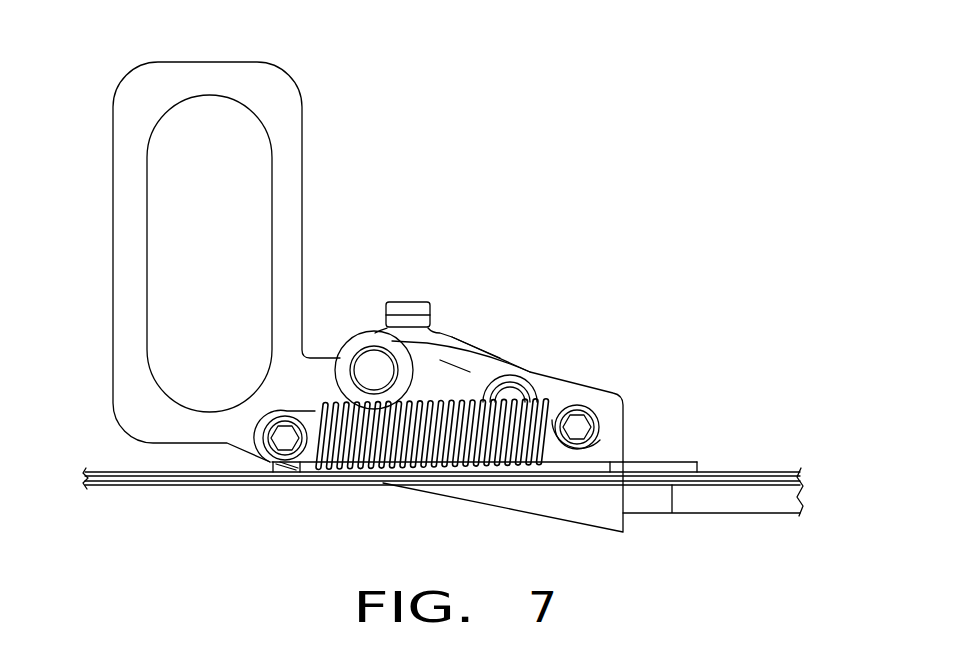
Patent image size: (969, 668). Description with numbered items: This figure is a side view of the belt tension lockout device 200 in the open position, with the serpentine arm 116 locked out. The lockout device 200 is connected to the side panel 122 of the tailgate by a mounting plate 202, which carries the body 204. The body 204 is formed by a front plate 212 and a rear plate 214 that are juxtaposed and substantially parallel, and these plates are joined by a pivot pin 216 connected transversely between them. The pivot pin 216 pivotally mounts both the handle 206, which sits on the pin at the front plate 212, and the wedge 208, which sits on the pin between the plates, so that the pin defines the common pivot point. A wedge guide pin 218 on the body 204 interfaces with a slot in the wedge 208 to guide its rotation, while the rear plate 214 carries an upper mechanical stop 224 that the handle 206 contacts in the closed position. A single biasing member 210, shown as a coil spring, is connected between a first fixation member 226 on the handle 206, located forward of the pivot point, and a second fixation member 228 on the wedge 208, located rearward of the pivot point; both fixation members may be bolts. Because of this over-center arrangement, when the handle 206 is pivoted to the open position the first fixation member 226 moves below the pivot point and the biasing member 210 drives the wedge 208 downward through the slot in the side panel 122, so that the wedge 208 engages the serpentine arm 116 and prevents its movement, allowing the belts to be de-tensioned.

The lockout device 200 is at (521, 206).
The mounting plate 202 is at (283, 462).
The body 204 is at (366, 313).
The handle 206 is at (117, 222).
The wedge 208 is at (590, 527).
The biasing member 210 is at (368, 470).
The front plate 212 is at (448, 376).
The rear plate 214 is at (448, 333).
The pivot pin 216 is at (370, 370).
The wedge guide pin 218 is at (530, 372).
The upper mechanical stop 224 is at (407, 302).
The first fixation member 226 is at (273, 428).
The second fixation member 228 is at (590, 415).
The side panel 122 is at (745, 472).
The serpentine arm 116 is at (730, 513).